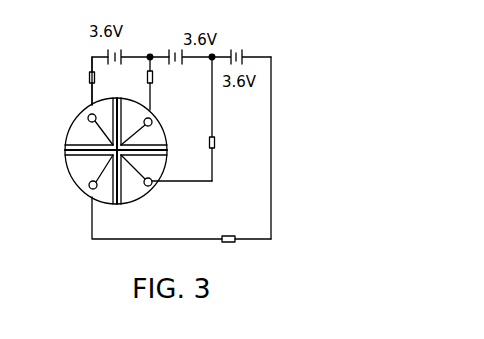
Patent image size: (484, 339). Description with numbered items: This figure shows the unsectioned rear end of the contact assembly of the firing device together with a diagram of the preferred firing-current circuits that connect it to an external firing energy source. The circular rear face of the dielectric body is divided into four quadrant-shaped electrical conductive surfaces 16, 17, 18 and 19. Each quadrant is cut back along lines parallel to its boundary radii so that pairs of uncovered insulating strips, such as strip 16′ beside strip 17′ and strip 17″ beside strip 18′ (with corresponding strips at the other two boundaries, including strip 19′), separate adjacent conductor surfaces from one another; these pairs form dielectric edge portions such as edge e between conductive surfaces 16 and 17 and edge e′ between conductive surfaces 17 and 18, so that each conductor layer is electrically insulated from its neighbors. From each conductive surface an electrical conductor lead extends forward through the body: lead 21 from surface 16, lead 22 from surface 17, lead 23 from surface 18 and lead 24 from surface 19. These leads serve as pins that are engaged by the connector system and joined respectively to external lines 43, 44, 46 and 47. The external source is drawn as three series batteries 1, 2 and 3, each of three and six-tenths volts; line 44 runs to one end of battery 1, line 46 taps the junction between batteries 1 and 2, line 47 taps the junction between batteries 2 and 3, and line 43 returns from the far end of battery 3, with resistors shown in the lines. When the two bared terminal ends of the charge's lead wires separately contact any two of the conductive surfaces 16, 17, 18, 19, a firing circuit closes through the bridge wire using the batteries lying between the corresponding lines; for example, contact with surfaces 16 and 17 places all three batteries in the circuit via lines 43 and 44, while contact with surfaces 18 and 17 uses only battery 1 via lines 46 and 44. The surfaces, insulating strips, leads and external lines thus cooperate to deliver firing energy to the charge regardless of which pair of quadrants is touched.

The battery 1 is at (128, 51).
The battery 2 is at (182, 63).
The battery 3 is at (245, 52).
The electrical conductive surface 16 is at (81, 182).
The insulating strip 16′ is at (76, 154).
The electrical conductive surface 17 is at (83, 125).
The insulating strip 17′ is at (77, 134).
The electrical conductive surface 18 is at (152, 122).
The insulating strip 18′ is at (136, 109).
The electrical conductive surface 19 is at (151, 194).
The insulating strip 19′ is at (161, 149).
The electrical conductor lead 21 is at (110, 240).
The electrical conductor lead 22 is at (90, 90).
The electrical conductor lead 23 is at (151, 88).
The electrical conductor lead 24 is at (200, 182).
The line 43 is at (272, 178).
The line 44 is at (92, 58).
The line 46 is at (152, 55).
The line 47 is at (213, 118).
The dielectric edge portion e is at (84, 156).
The dielectric edge portion e′ is at (128, 124).